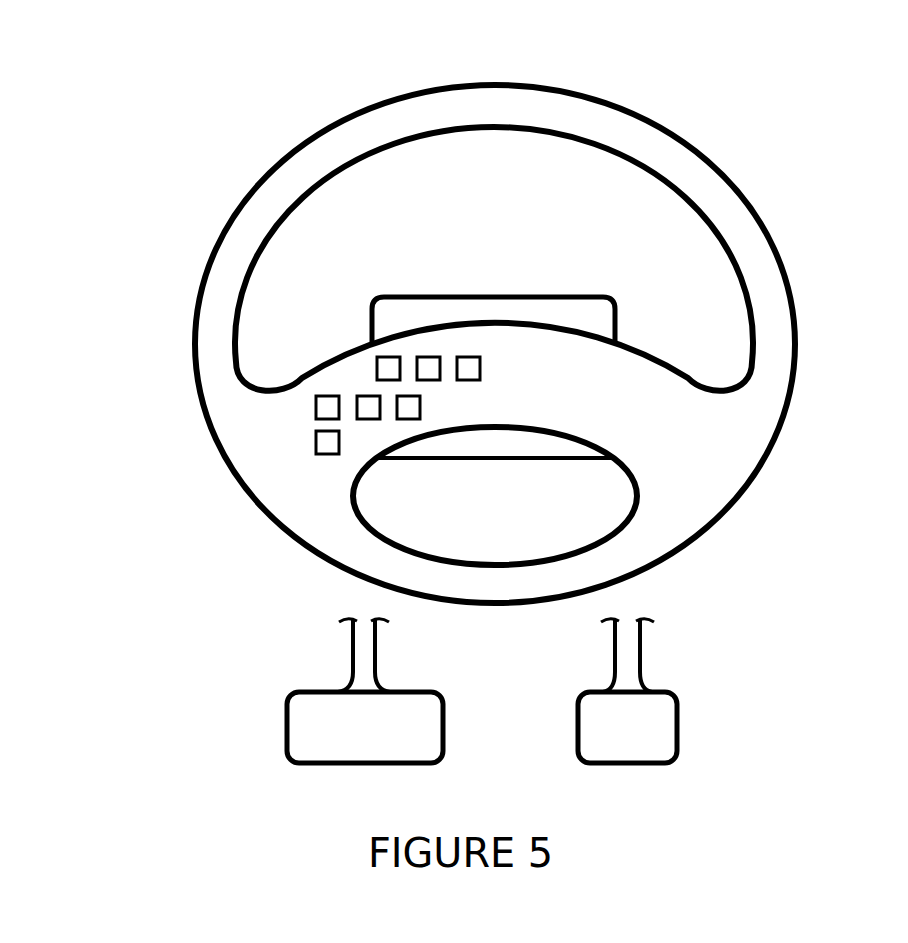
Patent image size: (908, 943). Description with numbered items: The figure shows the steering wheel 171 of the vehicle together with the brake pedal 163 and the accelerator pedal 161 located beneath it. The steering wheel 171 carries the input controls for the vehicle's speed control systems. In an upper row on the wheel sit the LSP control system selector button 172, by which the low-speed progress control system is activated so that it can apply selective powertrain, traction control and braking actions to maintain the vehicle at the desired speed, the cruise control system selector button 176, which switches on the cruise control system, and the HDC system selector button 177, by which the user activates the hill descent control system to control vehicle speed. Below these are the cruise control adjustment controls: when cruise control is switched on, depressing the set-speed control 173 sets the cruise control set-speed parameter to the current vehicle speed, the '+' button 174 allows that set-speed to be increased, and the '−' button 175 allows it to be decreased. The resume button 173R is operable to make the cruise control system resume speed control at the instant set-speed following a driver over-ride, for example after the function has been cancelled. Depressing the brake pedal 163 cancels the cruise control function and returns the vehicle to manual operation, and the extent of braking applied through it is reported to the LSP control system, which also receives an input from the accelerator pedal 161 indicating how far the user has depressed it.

The steering wheel 171 is at (765, 295).
The LSP control system selector button 172 is at (390, 357).
The cruise control system selector button 176 is at (435, 357).
The HDC system selector button 177 is at (470, 357).
The set-speed control 173 is at (357, 397).
The resume button 173R is at (407, 419).
The '+' button 174 is at (316, 400).
The '−' button 175 is at (316, 445).
The brake pedal 163 is at (303, 720).
The accelerator pedal 161 is at (657, 720).